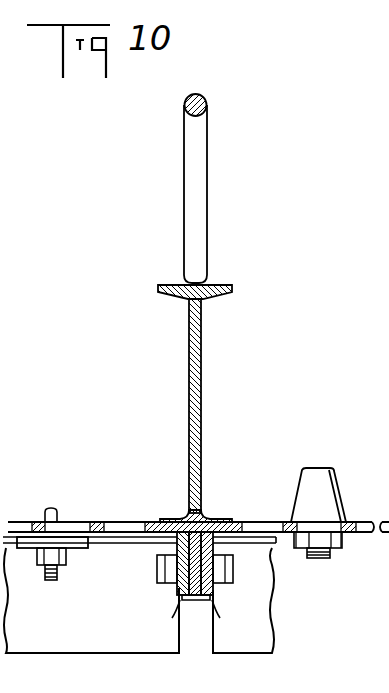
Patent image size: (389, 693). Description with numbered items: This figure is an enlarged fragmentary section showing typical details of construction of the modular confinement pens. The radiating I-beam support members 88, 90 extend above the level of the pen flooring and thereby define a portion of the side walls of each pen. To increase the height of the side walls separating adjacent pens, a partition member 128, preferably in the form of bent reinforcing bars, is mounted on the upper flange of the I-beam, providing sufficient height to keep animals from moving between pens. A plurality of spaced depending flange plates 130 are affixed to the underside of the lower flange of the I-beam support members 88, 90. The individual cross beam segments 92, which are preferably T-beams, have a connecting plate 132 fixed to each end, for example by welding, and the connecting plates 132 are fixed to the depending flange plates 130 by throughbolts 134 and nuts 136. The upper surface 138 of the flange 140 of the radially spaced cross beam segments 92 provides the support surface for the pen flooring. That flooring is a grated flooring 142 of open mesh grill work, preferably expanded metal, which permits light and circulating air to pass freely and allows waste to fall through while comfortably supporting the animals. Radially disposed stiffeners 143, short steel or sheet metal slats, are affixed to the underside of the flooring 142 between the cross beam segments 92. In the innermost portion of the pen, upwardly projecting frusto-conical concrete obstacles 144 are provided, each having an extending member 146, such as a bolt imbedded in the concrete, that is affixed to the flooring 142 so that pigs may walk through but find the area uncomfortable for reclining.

The partition member 128 is at (193, 138).
The radiating I-beam support member 88 is at (168, 399).
The radiating I-beam support member 90 is at (192, 345).
The depending flange plate 130 is at (203, 518).
The upper surface 138 is at (123, 532).
The flange 140 is at (122, 543).
The stiffener 143 is at (25, 550).
The grated flooring 142 is at (95, 522).
The extending member 146 is at (318, 524).
The obstacle 144 is at (317, 482).
The nut 136 is at (165, 583).
The throughbolt 134 is at (221, 572).
The connecting plate 132 is at (180, 600).
The cross beam segment 92 is at (52, 640).